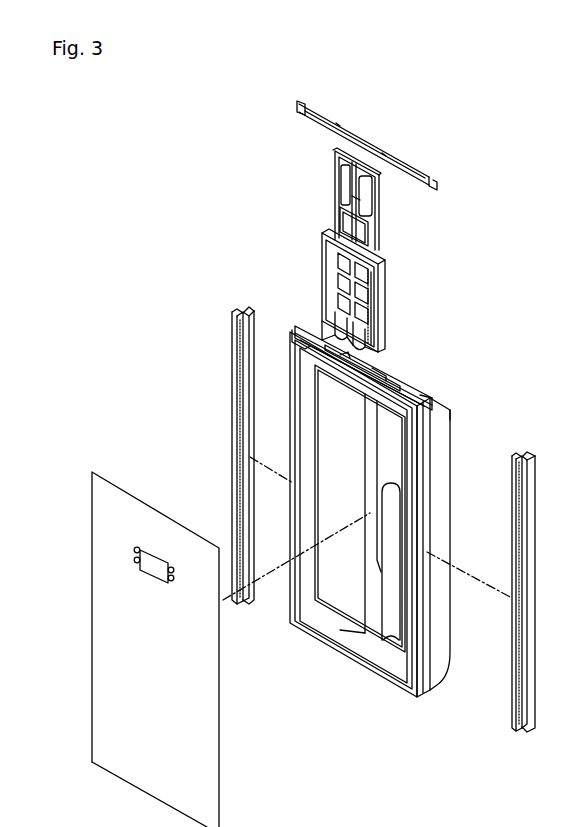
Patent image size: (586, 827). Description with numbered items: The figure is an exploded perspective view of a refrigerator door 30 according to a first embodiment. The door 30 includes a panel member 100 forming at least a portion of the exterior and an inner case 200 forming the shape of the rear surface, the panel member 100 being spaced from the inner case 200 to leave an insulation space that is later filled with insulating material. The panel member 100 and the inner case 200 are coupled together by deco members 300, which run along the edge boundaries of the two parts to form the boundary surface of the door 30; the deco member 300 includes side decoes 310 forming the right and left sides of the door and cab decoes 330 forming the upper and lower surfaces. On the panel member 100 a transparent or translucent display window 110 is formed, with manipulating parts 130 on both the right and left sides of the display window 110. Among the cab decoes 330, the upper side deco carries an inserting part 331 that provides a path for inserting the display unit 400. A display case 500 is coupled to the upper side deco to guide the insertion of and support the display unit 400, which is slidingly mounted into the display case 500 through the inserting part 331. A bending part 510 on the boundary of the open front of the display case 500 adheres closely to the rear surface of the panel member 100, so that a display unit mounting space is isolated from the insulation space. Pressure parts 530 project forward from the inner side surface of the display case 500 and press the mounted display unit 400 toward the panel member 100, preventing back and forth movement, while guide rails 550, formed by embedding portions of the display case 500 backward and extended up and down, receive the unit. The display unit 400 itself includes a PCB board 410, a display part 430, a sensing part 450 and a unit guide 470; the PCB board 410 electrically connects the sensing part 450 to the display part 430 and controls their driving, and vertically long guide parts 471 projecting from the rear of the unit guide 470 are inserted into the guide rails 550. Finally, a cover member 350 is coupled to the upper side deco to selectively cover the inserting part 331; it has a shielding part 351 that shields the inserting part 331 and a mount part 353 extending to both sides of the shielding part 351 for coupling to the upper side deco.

The door 30 is at (155, 249).
The panel member 100 is at (210, 773).
The display window 110 is at (153, 572).
The manipulating parts 130 is at (134, 550).
The inner case 200 is at (386, 411).
The deco member 300 is at (537, 361).
The side deco 310 is at (240, 400).
The cab deco 330 is at (425, 398).
The inserting part 331 is at (390, 362).
The cover member 350 is at (372, 89).
The shielding part 351 is at (358, 140).
The mount part 353 is at (331, 124).
The display unit 400 is at (272, 168).
The PCB board 410 is at (343, 198).
The display part 430 is at (345, 227).
The sensing part 450 is at (343, 213).
The unit guide 470 is at (335, 162).
The guide parts 471 is at (355, 203).
The display case 500 is at (315, 255).
The bending part 510 is at (322, 274).
The pressure parts 530 is at (340, 318).
The guide rails 550 is at (372, 317).